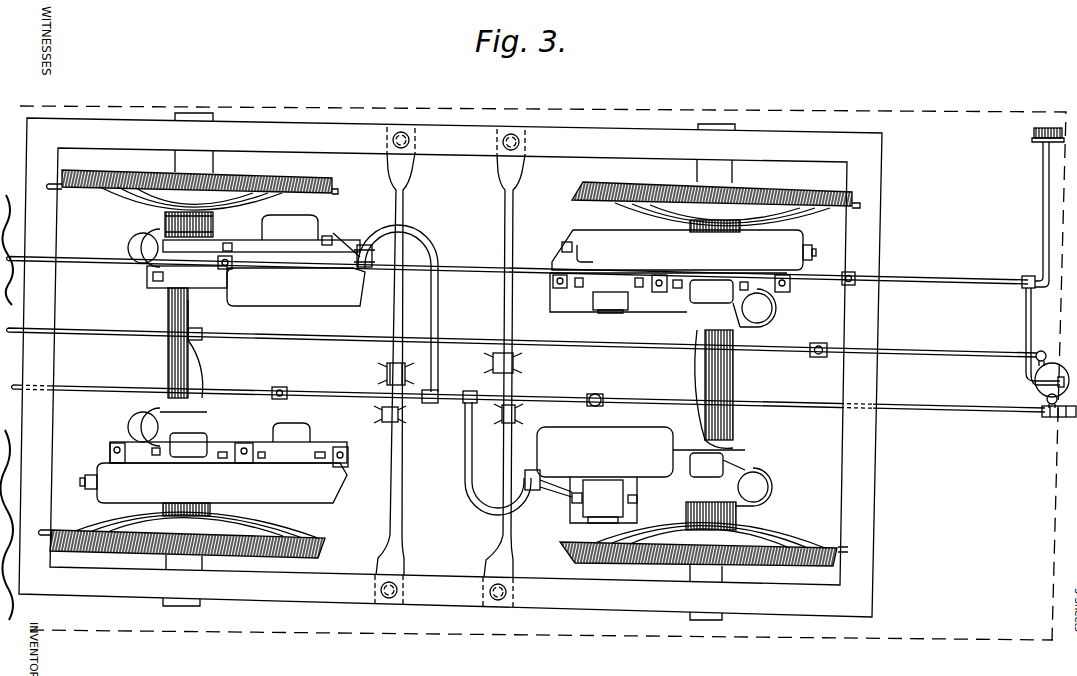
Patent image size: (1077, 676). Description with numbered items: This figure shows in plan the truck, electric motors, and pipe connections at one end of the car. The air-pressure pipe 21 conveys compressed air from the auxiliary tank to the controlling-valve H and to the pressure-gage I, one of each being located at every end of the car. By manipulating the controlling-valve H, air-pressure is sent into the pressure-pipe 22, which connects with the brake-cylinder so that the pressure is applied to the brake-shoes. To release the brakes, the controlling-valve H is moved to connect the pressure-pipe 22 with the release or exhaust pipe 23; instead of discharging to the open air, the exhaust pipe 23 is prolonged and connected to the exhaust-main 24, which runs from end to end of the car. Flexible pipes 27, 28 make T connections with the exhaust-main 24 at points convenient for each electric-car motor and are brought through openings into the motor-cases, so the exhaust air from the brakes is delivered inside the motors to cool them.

The air-pressure pipe 21 is at (518, 270).
The pressure-pipe 22 is at (522, 352).
The release or exhaust pipe 23 is at (1036, 391).
The exhaust-main 24 is at (529, 397).
The flexible pipe 27 is at (433, 363).
The flexible pipe 28 is at (467, 441).
The controlling-valve H is at (1052, 365).
The pressure-gage I is at (1035, 208).